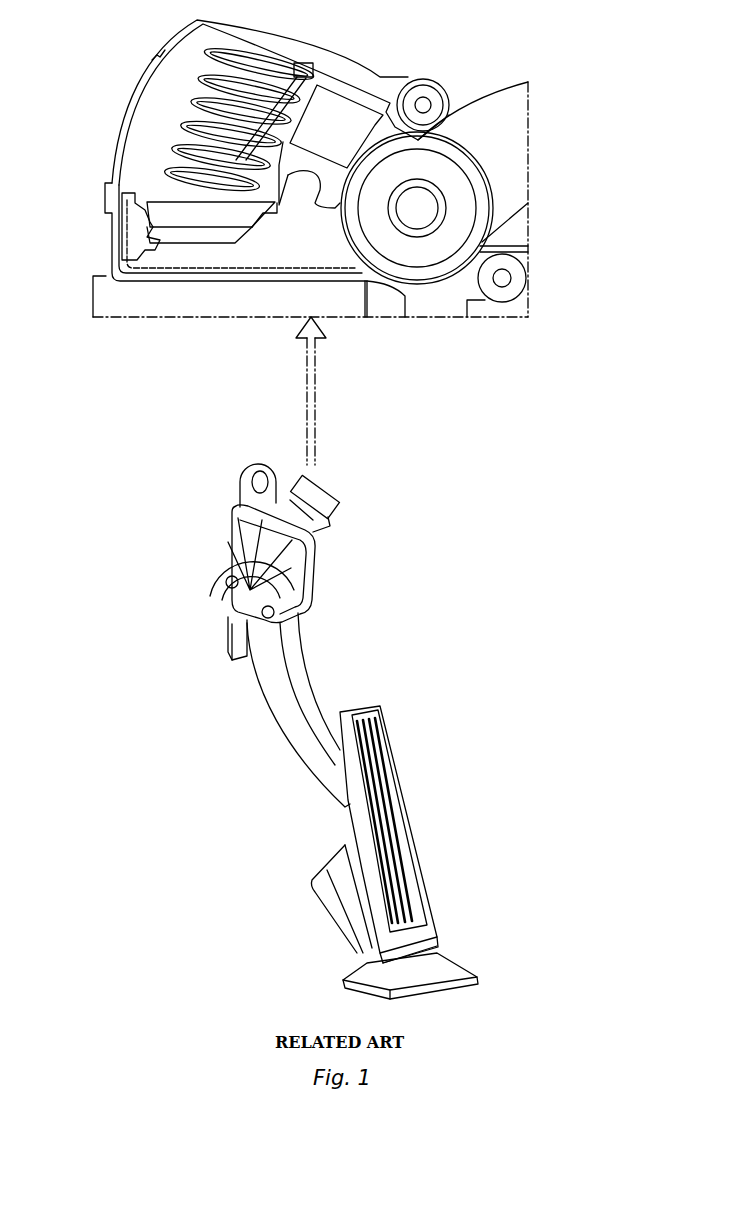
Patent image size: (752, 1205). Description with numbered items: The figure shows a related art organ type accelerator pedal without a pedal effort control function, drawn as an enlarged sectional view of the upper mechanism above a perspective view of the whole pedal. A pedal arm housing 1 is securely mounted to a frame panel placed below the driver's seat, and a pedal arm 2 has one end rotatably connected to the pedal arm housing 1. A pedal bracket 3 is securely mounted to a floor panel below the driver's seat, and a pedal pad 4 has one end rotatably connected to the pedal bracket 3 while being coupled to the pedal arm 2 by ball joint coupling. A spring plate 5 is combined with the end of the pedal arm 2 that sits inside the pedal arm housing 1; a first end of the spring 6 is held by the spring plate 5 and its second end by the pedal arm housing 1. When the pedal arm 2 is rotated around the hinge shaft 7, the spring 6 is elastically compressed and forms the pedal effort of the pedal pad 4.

The pedal arm housing 1 is at (150, 70).
The pedal arm 2 is at (510, 158).
The pedal bracket 3 is at (332, 905).
The pedal pad 4 is at (403, 833).
The spring plate 5 is at (198, 220).
The spring 6 is at (168, 155).
The hinge shaft 7 is at (417, 208).